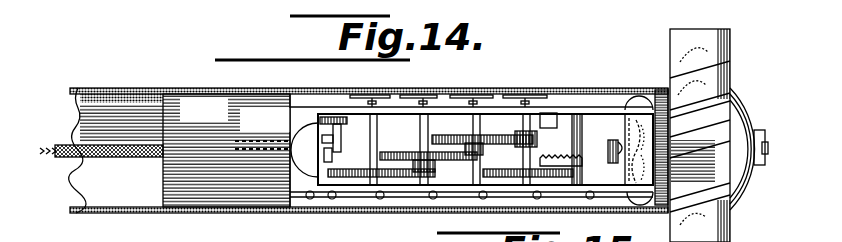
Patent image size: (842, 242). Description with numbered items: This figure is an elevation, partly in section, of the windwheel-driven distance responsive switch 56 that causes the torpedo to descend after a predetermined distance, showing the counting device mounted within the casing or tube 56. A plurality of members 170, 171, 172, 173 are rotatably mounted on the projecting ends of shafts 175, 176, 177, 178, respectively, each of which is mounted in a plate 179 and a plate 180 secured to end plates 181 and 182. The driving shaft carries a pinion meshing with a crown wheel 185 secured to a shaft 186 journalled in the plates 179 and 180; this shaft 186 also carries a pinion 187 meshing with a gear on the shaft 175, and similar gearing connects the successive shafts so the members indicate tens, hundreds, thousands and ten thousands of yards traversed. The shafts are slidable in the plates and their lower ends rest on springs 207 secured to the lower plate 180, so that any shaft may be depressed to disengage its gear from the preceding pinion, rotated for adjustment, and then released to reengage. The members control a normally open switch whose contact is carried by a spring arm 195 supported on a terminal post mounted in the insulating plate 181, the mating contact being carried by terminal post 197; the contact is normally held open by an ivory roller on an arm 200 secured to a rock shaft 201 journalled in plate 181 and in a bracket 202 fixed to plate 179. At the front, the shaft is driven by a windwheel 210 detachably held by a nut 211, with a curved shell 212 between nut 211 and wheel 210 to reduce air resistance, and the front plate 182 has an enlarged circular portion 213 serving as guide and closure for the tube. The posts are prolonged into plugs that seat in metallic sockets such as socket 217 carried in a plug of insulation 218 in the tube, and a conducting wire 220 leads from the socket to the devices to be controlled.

The distance responsive switch 56 is at (251, 213).
The member 170 is at (522, 95).
The member 171 is at (466, 94).
The member 172 is at (413, 95).
The member 173 is at (357, 95).
The shaft 175 is at (530, 155).
The shaft 176 is at (482, 130).
The shaft 177 is at (428, 138).
The shaft 178 is at (378, 157).
The plate 179 is at (623, 110).
The plate 180 is at (615, 193).
The end plate 181 is at (311, 150).
The end plate 182 is at (647, 152).
The crown wheel 185 is at (561, 153).
The shaft 186 is at (582, 132).
The pinion 187 is at (606, 160).
The spring arm 195 is at (318, 127).
The terminal post 197 is at (327, 157).
The arm 200 is at (336, 138).
The rock shaft 201 is at (334, 117).
The bracket 202 is at (557, 114).
The spring 207 is at (355, 198).
The windwheel 210 is at (732, 42).
The nut 211 is at (768, 160).
The curved shell 212 is at (748, 108).
The enlarged circular portion 213 is at (662, 140).
The metallic socket 217 is at (258, 132).
The plug of insulation 218 is at (226, 150).
The conducting wire 220 is at (70, 144).